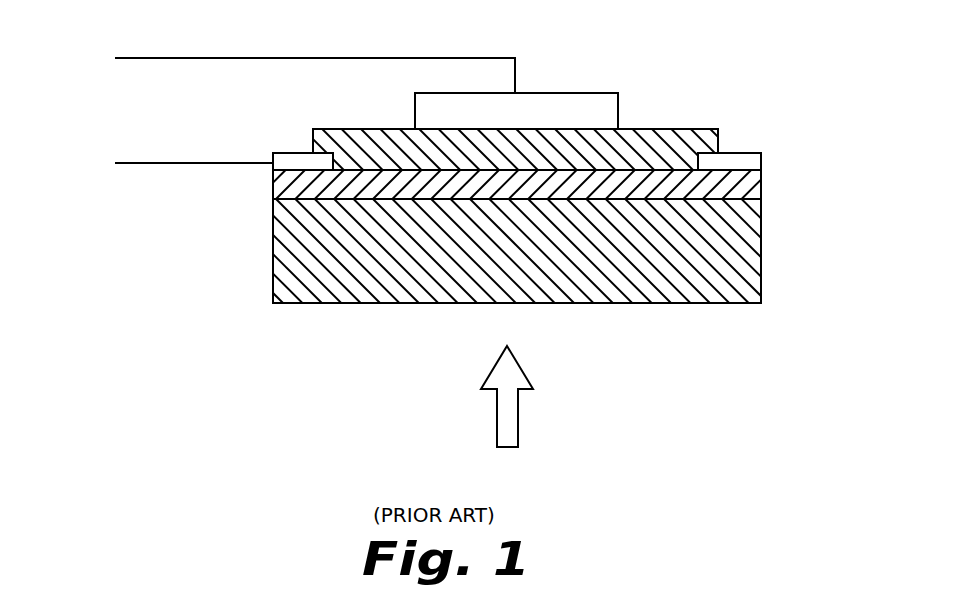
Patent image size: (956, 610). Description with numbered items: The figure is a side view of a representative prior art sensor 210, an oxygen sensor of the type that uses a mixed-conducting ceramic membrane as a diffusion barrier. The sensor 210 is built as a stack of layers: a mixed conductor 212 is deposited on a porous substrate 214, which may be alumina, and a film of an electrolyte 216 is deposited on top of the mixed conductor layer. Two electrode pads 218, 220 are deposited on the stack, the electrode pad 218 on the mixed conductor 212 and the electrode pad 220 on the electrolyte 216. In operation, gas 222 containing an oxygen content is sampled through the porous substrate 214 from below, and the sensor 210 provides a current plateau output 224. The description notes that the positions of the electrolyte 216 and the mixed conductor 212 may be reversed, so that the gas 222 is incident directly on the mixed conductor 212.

The prior art sensor 210 is at (258, 337).
The mixed conductor 212 is at (760, 160).
The porous substrate 214 is at (728, 288).
The electrolyte 216 is at (693, 133).
The electrode pad 218 is at (287, 153).
The electrode pad 220 is at (572, 108).
The gas 222 is at (525, 417).
The current plateau output 224 is at (162, 142).